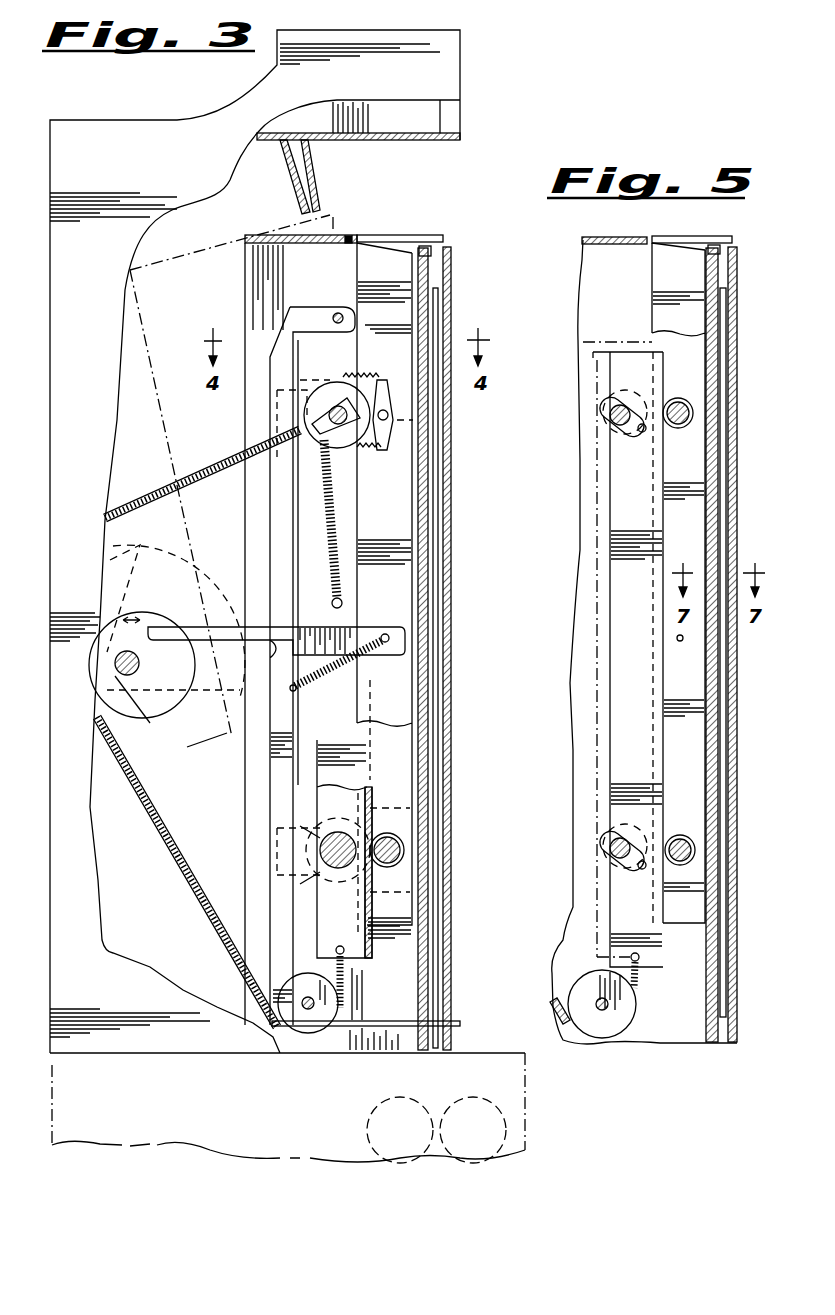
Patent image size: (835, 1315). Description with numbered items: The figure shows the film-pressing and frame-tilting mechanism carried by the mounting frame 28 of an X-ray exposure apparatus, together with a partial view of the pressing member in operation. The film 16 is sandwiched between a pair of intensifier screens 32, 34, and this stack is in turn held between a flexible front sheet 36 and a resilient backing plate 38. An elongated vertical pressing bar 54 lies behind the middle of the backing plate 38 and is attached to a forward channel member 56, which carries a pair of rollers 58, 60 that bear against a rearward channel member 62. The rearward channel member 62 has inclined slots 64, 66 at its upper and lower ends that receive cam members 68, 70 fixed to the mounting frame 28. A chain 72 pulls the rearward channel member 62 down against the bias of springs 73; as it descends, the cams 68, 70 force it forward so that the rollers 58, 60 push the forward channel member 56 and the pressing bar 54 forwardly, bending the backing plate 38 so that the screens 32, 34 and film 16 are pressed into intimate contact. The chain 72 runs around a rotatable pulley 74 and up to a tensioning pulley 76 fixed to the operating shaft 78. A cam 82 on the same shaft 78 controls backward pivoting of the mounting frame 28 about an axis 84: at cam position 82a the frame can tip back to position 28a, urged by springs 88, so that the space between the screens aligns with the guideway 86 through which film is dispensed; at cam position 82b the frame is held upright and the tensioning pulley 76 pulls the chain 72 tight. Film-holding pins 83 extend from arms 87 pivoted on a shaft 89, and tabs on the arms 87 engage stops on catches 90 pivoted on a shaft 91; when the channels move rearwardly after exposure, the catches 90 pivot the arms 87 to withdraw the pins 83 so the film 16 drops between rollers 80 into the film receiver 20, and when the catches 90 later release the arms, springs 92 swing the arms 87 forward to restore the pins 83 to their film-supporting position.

In FIG. 3, the film 16 is at (440, 497).
In FIG. 5, the film 16 is at (730, 770).
In FIG. 3, the film receiver 20 is at (520, 1133).
In FIG. 5, the mounting frame 28 is at (573, 304).
In FIG. 3, the mounting frame position 28a is at (231, 476).
In FIG. 3, the intensifier screen 32 is at (450, 540).
In FIG. 5, the intensifier screen 32 is at (735, 722).
In FIG. 3, the intensifier screen 34 is at (438, 303).
In FIG. 5, the intensifier screen 34 is at (724, 378).
In FIG. 3, the flexible front sheet 36 is at (452, 588).
In FIG. 5, the flexible front sheet 36 is at (737, 678).
In FIG. 3, the resilient backing plate 38 is at (421, 253).
In FIG. 5, the resilient backing plate 38 is at (718, 330).
In FIG. 3, the pressing bar 54 is at (431, 263).
In FIG. 5, the pressing bar 54 is at (720, 256).
In FIG. 3, the forward channel member 56 is at (380, 253).
In FIG. 5, the forward channel member 56 is at (660, 284).
In FIG. 3, the roller 58 is at (412, 420).
In FIG. 5, the roller 58 is at (677, 397).
In FIG. 3, the roller 60 is at (405, 850).
In FIG. 5, the roller 60 is at (680, 835).
In FIG. 3, the rearward channel member 62 is at (358, 950).
In FIG. 5, the rearward channel member 62 is at (613, 503).
In FIG. 5, the inclined slot 64 is at (640, 428).
In FIG. 5, the inclined slot 66 is at (640, 864).
In FIG. 5, the cam member 68 is at (605, 410).
In FIG. 3, the cam member 70 is at (345, 838).
In FIG. 5, the cam member 70 is at (607, 847).
In FIG. 3, the chain 72 is at (162, 830).
In FIG. 5, the chain 72 is at (636, 985).
In FIG. 3, the springs 73 is at (332, 490).
In FIG. 3, the rotatable pulley 74 is at (337, 1000).
In FIG. 5, the rotatable pulley 74 is at (630, 1017).
In FIG. 3, the tensioning pulley 76 is at (143, 720).
In FIG. 3, the operating shaft 78 is at (118, 670).
In FIG. 3, the rollers 80 is at (450, 1105).
In FIG. 3, the cam 82 is at (193, 578).
In FIG. 3, the cam position 82a is at (108, 560).
In FIG. 3, the cam position 82b is at (192, 732).
In FIG. 3, the film-holding pins 83 is at (457, 1020).
In FIG. 3, the axis 84 is at (305, 1010).
In FIG. 5, the axis 84 is at (602, 1010).
In FIG. 3, the guideway 86 is at (302, 181).
In FIG. 3, the arms 87 is at (280, 530).
In FIG. 3, the springs 88 is at (163, 482).
In FIG. 3, the shaft 89 is at (338, 313).
In FIG. 3, the catches 90 is at (167, 620).
In FIG. 3, the shaft 91 is at (385, 634).
In FIG. 3, the springs 92 is at (340, 670).